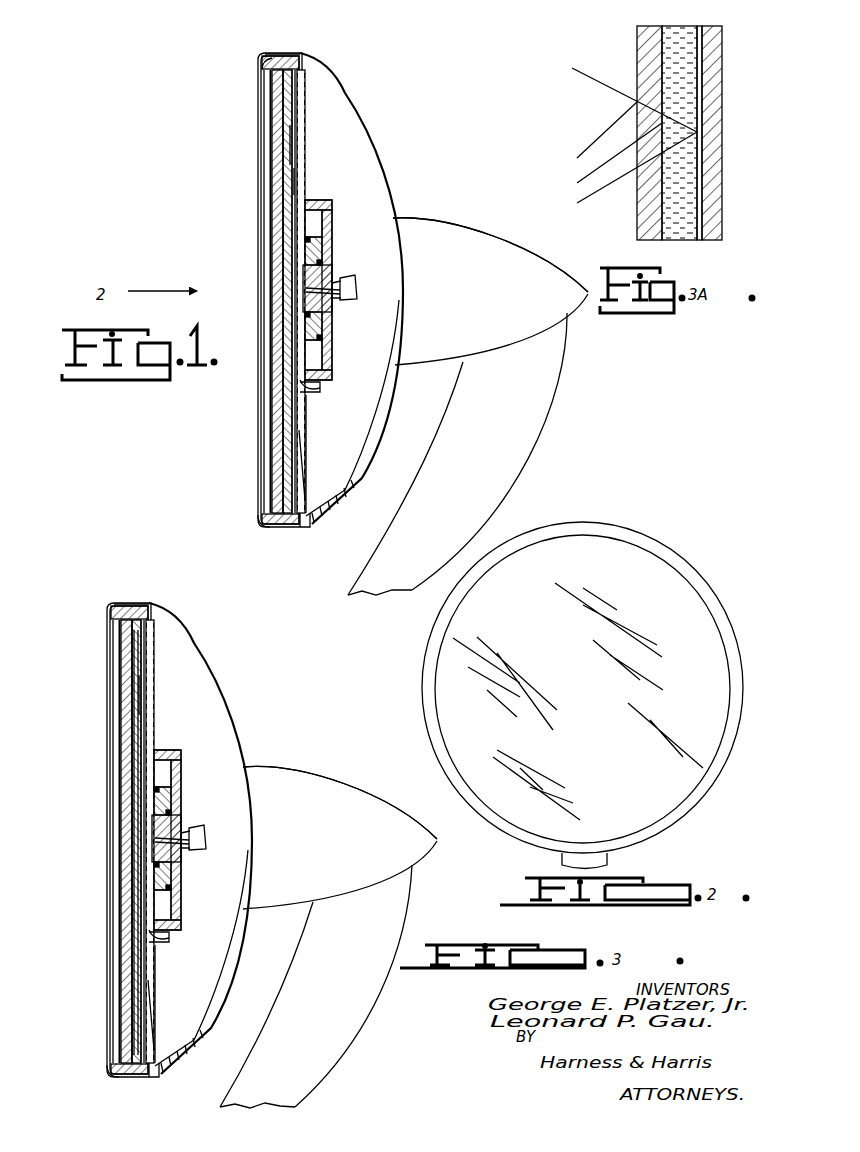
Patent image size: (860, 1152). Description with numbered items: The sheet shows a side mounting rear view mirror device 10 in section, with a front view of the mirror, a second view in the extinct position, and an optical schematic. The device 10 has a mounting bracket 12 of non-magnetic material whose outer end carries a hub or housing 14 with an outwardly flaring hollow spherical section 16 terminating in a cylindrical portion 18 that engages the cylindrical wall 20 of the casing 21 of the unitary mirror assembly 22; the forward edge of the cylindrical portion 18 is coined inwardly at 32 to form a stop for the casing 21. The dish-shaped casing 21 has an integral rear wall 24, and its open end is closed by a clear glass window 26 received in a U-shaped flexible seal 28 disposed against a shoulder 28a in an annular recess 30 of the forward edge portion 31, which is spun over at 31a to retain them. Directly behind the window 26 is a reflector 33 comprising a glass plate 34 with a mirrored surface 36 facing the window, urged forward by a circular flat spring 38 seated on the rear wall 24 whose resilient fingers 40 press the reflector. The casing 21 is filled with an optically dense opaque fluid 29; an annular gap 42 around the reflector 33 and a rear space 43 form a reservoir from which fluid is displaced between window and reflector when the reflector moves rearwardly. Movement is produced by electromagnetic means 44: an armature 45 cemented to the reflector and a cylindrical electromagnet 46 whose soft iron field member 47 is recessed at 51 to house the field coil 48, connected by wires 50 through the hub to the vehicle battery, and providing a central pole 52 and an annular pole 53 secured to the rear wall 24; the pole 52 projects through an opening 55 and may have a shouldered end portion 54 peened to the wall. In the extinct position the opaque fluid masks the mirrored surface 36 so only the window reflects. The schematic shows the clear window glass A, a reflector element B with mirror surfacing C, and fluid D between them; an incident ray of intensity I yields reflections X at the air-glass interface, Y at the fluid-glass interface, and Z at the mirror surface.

In FIG. 1, the rear view mirror device 10 is at (562, 386).
In FIG. 3, the rear view mirror device 10 is at (355, 842).
In FIG. 1, the mounting bracket 12 is at (500, 468).
In FIG. 3, the mounting bracket 12 is at (318, 986).
In FIG. 2, the mounting bracket 12 is at (562, 858).
In FIG. 1, the hub or housing 14 is at (531, 263).
In FIG. 3, the hub or housing 14 is at (340, 833).
In FIG. 1, the hollow spherical section 16 is at (371, 150).
In FIG. 3, the hollow spherical section 16 is at (215, 838).
In FIG. 1, the cylindrical portion 18 is at (302, 64).
In FIG. 3, the cylindrical portion 18 is at (145, 583).
In FIG. 1, the cylindrical wall 20 is at (296, 528).
In FIG. 3, the cylindrical wall 20 is at (172, 1068).
In FIG. 1, the casing or enclosure 21 is at (311, 432).
In FIG. 3, the casing or enclosure 21 is at (186, 1004).
In FIG. 1, the unitary mirror assembly 22 is at (306, 136).
In FIG. 3, the unitary mirror assembly 22 is at (201, 841).
In FIG. 1, the rear wall 24 is at (295, 178).
In FIG. 1, the sealing glass or window 26 is at (272, 425).
In FIG. 3, the sealing glass or window 26 is at (99, 841).
In FIG. 2, the sealing glass or window 26 is at (581, 636).
In FIG. 1, the flexible seal 28 is at (262, 57).
In FIG. 3, the flexible seal 28 is at (131, 822).
In FIG. 1, the shoulder 28a is at (294, 58).
In FIG. 1, the optically dense fluid 29 is at (301, 150).
In FIG. 3, the optically dense fluid 29 is at (94, 818).
In FIG. 1, the annular recess 30 is at (276, 528).
In FIG. 3, the annular recess 30 is at (113, 1082).
In FIG. 1, the forward edge portion 31 is at (286, 528).
In FIG. 3, the forward edge portion 31 is at (123, 1089).
In FIG. 1, the coined-over edge 31a is at (262, 518).
In FIG. 3, the coined-over edge 31a is at (80, 1070).
In FIG. 1, the inwardly coined edge 32 is at (262, 512).
In FIG. 3, the inwardly coined edge 32 is at (90, 841).
In FIG. 2, the inwardly coined edge 32 is at (675, 567).
In FIG. 1, the reflector 33 is at (284, 480).
In FIG. 3, the reflector 33 is at (159, 877).
In FIG. 1, the plate 34 is at (291, 91).
In FIG. 3, the plate 34 is at (177, 836).
In FIG. 1, the mirrored surface 36 is at (276, 120).
In FIG. 3, the mirrored surface 36 is at (96, 841).
In FIG. 1, the circular flat spring 38 is at (300, 105).
In FIG. 3, the circular flat spring 38 is at (188, 841).
In FIG. 1, the resilient fingers 40 is at (271, 139).
In FIG. 3, the resilient fingers 40 is at (196, 841).
In FIG. 1, the annular gap 42 is at (303, 74).
In FIG. 3, the annular gap 42 is at (156, 601).
In FIG. 1, the space or reservoir chamber 43 is at (301, 406).
In FIG. 3, the space or reservoir chamber 43 is at (188, 938).
In FIG. 1, the electromagnetic means 44 is at (336, 206).
In FIG. 3, the electromagnetic means 44 is at (190, 835).
In FIG. 1, the armature 45 is at (306, 205).
In FIG. 3, the armature 45 is at (216, 740).
In FIG. 1, the cylindrical electromagnet 46 is at (325, 223).
In FIG. 3, the cylindrical electromagnet 46 is at (195, 773).
In FIG. 1, the soft iron field member 47 is at (323, 249).
In FIG. 3, the soft iron field member 47 is at (162, 801).
In FIG. 1, the electric field coil 48 is at (326, 336).
In FIG. 3, the electric field coil 48 is at (195, 865).
In FIG. 1, the wires 50 is at (342, 282).
In FIG. 3, the wires 50 is at (197, 831).
In FIG. 1, the recess 51 is at (321, 359).
In FIG. 3, the recess 51 is at (171, 820).
In FIG. 1, the central pole portion 52 is at (306, 300).
In FIG. 3, the central pole portion 52 is at (128, 843).
In FIG. 1, the annular pole 53 is at (321, 389).
In FIG. 3, the annular pole 53 is at (189, 924).
In FIG. 3, the shouldered end portion 54 is at (103, 842).
In FIG. 3, the opening 55 is at (103, 842).
In FIG. 3A, the clear glass window A is at (637, 206).
In FIG. 3A, the reflector element B is at (722, 226).
In FIG. 3A, the mirror surfacing C is at (699, 186).
In FIG. 3A, the body of fluid D is at (686, 173).
In FIG. 3A, the light ray intensity I is at (626, 95).
In FIG. 3A, the reflection at air-glass interface X is at (599, 134).
In FIG. 3A, the reflection at fluid-glass interface Y is at (612, 157).
In FIG. 3A, the reflection at mirror surface Z is at (629, 172).